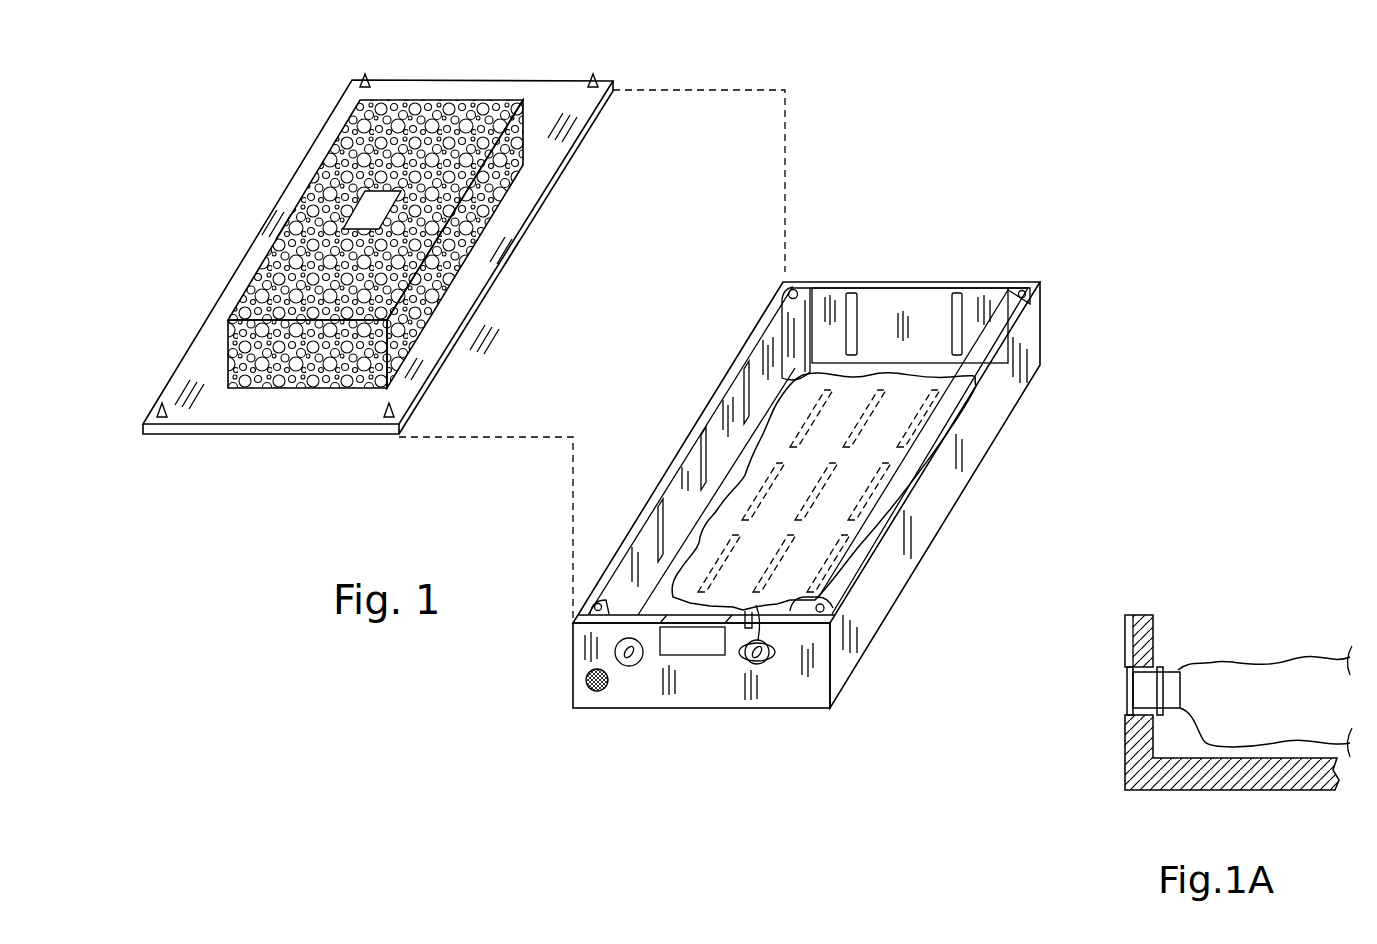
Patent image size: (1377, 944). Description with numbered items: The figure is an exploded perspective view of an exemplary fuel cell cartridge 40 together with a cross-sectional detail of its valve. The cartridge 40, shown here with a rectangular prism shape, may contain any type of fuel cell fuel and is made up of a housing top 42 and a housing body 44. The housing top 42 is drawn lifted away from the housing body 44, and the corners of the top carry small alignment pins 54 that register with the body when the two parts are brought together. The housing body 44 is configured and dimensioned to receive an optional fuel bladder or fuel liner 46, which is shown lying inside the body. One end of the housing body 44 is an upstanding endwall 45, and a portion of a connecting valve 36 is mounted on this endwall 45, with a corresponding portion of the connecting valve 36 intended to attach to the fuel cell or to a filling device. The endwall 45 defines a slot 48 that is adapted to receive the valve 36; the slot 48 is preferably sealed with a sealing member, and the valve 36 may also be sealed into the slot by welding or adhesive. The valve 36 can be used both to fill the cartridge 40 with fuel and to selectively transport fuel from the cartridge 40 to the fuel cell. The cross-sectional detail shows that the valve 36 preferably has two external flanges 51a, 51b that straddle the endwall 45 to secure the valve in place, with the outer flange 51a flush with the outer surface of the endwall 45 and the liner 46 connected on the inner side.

In FIG. 1, the cartridge 40 is at (967, 140).
In FIG. 1, the housing top 42 is at (252, 188).
In FIG. 1, the alignment pins 54 is at (603, 76).
In FIG. 1, the housing body 44 is at (836, 486).
In FIG. 1A, the housing body 44 is at (1187, 775).
In FIG. 1, the upstanding endwall 45 is at (637, 700).
In FIG. 1A, the upstanding endwall 45 is at (1128, 740).
In FIG. 1, the fuel liner 46 is at (933, 426).
In FIG. 1A, the fuel liner 46 is at (1301, 713).
In FIG. 1, the slot 48 is at (733, 618).
In FIG. 1, the connecting valve 36 is at (764, 664).
In FIG. 1A, the connecting valve 36 is at (1186, 655).
In FIG. 1A, the outer flange 51a is at (1128, 688).
In FIG. 1A, the inner flange 51b is at (1161, 666).